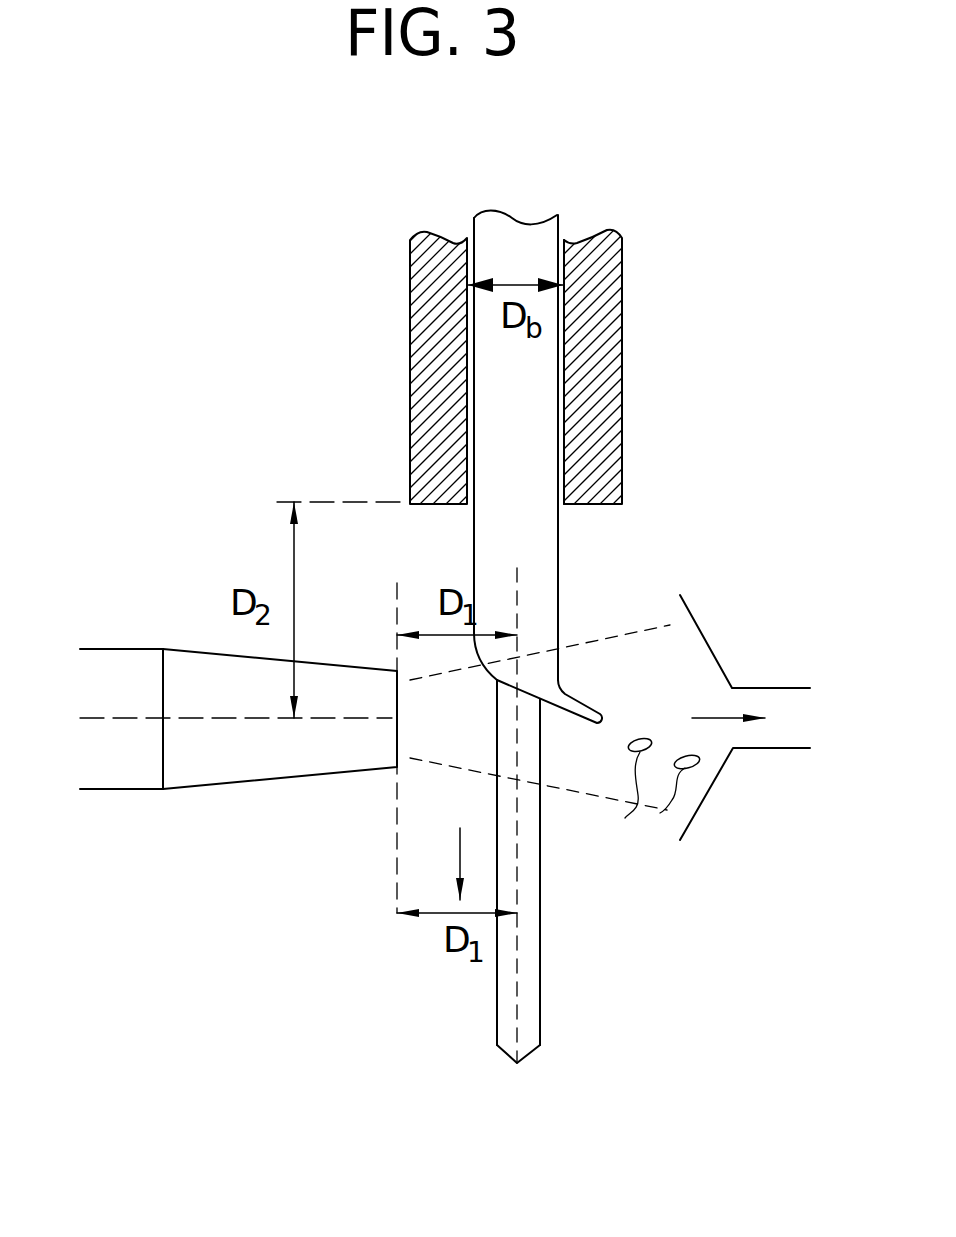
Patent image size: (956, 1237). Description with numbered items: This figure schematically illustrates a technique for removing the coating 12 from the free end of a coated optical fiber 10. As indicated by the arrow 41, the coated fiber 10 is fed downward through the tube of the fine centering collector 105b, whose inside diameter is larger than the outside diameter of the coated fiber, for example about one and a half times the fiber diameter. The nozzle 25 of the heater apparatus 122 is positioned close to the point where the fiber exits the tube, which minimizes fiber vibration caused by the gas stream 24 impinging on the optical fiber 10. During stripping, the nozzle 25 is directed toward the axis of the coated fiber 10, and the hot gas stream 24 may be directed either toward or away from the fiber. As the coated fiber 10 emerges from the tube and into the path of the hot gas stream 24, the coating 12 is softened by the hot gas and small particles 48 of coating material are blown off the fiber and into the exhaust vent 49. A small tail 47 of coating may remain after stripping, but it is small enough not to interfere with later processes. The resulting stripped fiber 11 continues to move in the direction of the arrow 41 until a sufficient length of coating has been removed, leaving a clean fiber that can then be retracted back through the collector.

The fine centering collector 105b is at (649, 390).
The coated optical fiber 10 is at (474, 545).
The coating 12 is at (543, 565).
The tail 47 is at (563, 693).
The stripped fiber 11 is at (530, 918).
The heater apparatus 122 is at (140, 790).
The nozzle 25 is at (278, 780).
The gas stream 24 is at (478, 738).
The arrow 41 is at (460, 848).
The particles 48 is at (665, 810).
The exhaust vent 49 is at (720, 792).